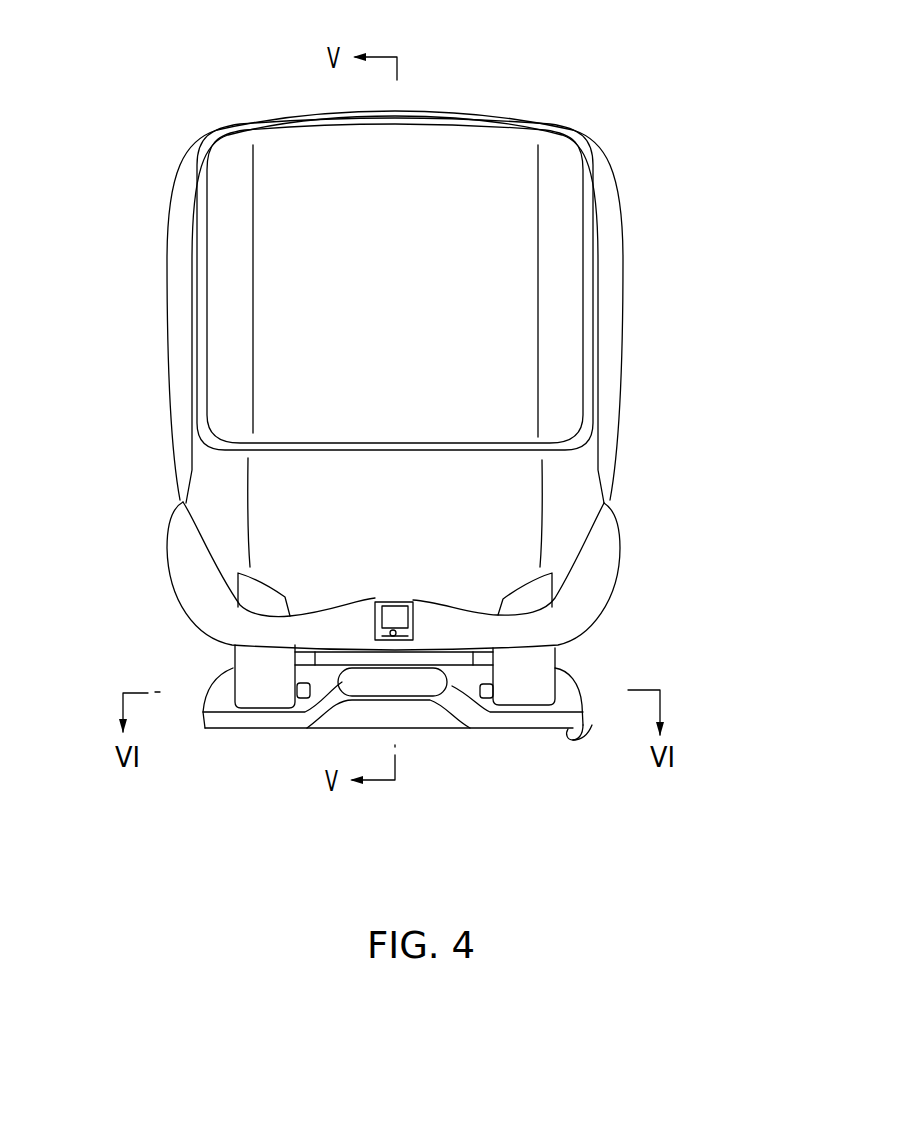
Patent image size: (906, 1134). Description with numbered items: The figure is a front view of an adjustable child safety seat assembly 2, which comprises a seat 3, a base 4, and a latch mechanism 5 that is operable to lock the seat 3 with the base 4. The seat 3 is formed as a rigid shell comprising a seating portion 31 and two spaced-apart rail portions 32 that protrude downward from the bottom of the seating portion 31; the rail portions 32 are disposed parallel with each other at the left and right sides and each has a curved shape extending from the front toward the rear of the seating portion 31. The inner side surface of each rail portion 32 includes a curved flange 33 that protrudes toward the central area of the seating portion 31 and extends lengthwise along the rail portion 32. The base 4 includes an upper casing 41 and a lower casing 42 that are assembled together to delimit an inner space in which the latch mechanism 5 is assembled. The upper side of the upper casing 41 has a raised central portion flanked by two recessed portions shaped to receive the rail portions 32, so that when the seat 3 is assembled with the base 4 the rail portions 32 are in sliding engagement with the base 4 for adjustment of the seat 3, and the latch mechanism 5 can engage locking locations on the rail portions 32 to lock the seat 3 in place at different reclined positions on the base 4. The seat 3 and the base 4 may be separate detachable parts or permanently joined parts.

The child safety seat assembly 2 is at (130, 106).
The seat 3 is at (625, 292).
The seating portion 31 is at (522, 545).
The rail portion 32 is at (525, 677).
The flange 33 is at (482, 690).
The base 4 is at (730, 613).
The upper casing 41 is at (578, 687).
The lower casing 42 is at (587, 733).
The latch mechanism 5 is at (428, 680).